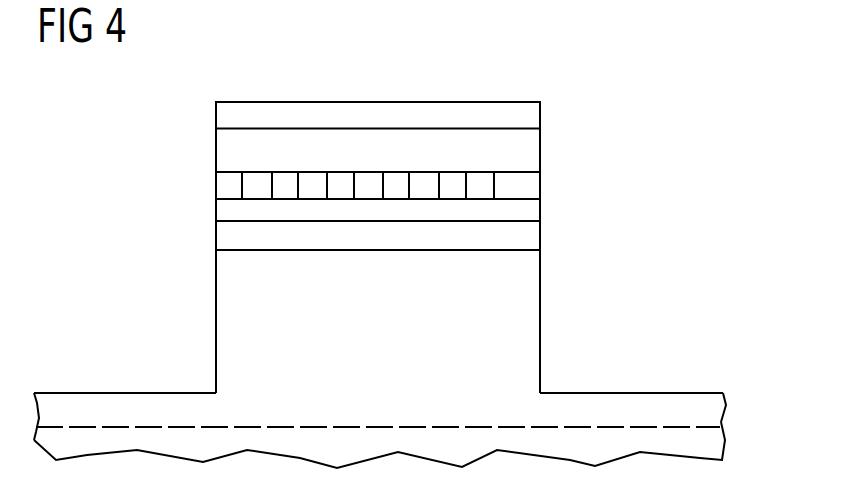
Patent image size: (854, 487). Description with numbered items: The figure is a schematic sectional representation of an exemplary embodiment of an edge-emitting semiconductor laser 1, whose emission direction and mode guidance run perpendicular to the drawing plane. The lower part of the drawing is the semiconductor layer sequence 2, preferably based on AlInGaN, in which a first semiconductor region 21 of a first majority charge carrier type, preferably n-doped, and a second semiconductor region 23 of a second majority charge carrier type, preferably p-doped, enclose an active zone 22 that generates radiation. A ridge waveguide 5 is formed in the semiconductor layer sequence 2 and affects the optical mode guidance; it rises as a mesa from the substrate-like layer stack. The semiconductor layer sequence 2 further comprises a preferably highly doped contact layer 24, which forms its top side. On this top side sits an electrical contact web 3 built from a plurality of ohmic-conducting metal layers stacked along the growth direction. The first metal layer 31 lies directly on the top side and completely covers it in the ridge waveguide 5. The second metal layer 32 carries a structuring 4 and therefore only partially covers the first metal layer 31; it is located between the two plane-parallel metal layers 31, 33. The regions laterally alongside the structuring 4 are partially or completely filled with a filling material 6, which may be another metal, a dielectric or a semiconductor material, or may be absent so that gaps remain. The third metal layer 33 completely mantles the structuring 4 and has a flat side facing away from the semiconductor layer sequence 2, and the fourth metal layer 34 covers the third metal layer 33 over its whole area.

The semiconductor laser 1 is at (691, 122).
The semiconductor layer sequence 2 is at (783, 220).
The electrical contact web 3 is at (150, 100).
The structuring 4 is at (418, 184).
The ridge waveguide 5 is at (542, 334).
The filling material 6 is at (453, 187).
The first semiconductor region 21 is at (706, 443).
The active zone 22 is at (706, 426).
The second semiconductor region 23 is at (708, 406).
The contact layer 24 is at (527, 237).
The first metal layer 31 is at (527, 210).
The second metal layer 32 is at (418, 128).
The third metal layer 33 is at (226, 156).
The fourth metal layer 34 is at (226, 113).